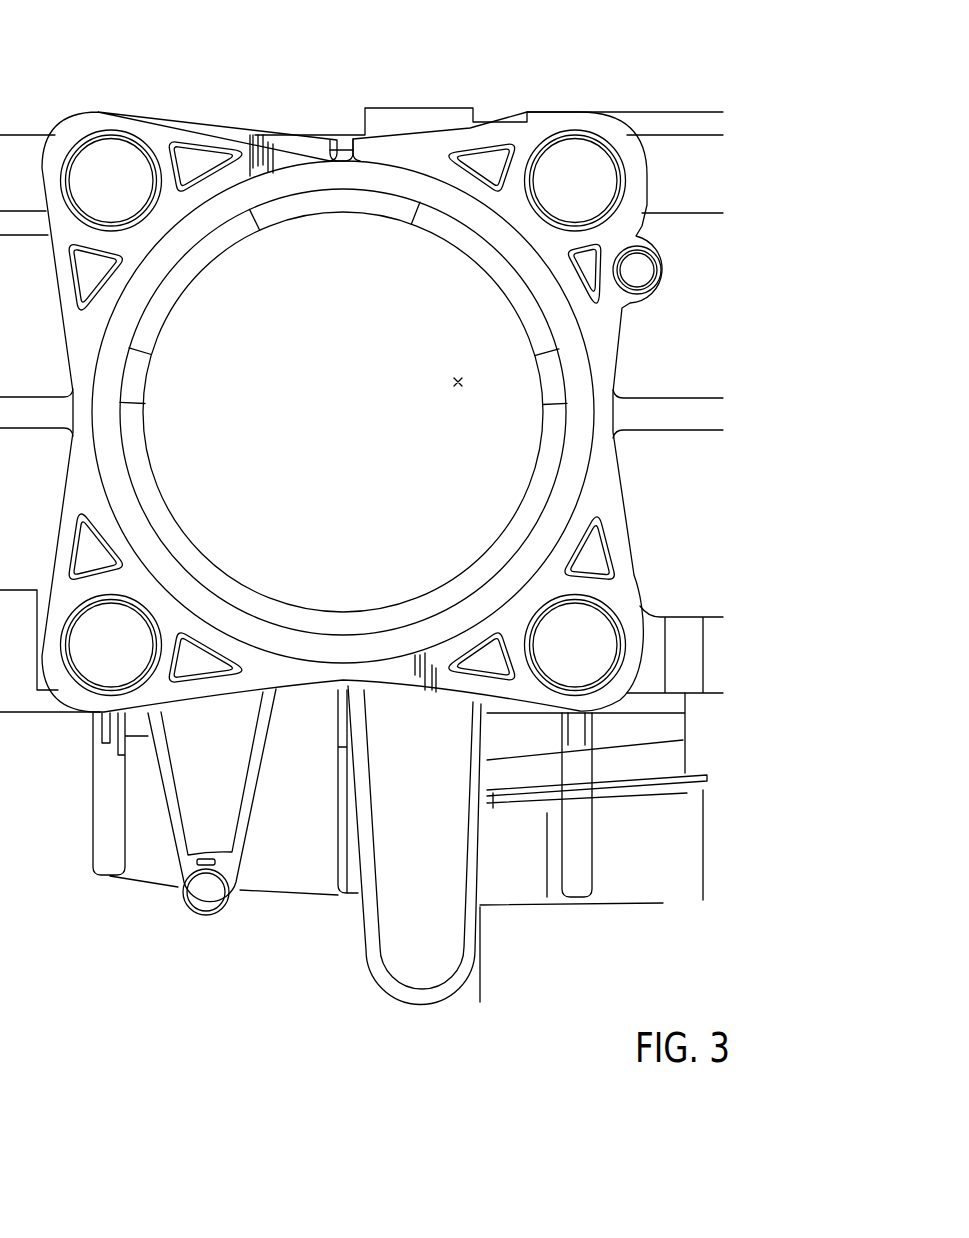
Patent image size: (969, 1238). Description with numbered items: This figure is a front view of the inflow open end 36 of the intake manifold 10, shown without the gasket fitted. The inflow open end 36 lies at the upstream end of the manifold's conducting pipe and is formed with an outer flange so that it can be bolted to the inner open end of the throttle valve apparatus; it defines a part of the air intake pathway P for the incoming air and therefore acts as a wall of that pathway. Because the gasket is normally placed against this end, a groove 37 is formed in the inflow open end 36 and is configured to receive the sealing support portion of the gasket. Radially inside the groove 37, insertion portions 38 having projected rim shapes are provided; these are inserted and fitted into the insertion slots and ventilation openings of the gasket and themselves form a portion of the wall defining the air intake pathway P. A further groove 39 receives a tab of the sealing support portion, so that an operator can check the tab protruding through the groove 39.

The intake manifold 10 is at (600, 92).
The inflow open end 36 is at (565, 470).
The groove 37 is at (418, 173).
The insertion portions 38 is at (182, 275).
The groove 39 is at (340, 147).
The air intake pathway P is at (458, 382).